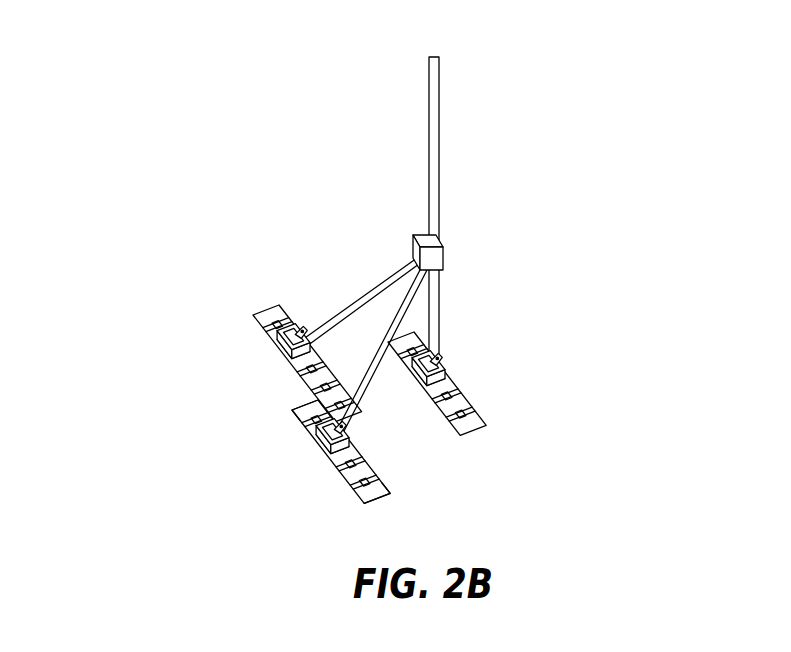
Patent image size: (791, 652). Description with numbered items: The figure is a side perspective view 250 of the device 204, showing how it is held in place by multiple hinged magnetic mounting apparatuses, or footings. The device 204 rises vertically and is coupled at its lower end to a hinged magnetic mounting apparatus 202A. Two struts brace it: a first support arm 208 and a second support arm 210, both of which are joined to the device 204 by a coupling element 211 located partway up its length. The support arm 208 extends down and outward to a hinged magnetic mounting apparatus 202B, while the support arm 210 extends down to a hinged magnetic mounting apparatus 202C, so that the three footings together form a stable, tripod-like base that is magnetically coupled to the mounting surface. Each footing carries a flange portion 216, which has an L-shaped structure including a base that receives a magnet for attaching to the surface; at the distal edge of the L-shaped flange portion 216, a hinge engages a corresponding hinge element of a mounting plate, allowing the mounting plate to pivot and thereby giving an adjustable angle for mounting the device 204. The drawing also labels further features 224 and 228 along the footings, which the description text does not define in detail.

The side perspective view 250 is at (113, 65).
The device 204 is at (427, 103).
The coupling element 211 is at (445, 250).
The first support arm 208 is at (380, 283).
The second support arm 210 is at (365, 378).
The hinged magnetic mounting apparatus 202A is at (536, 351).
The hinged magnetic mounting apparatus 202B is at (224, 296).
The hinged magnetic mounting apparatus 202C is at (261, 475).
The flange portion 216 is at (303, 446).
The cross tie 224 is at (320, 433).
The rail end 228 is at (292, 412).